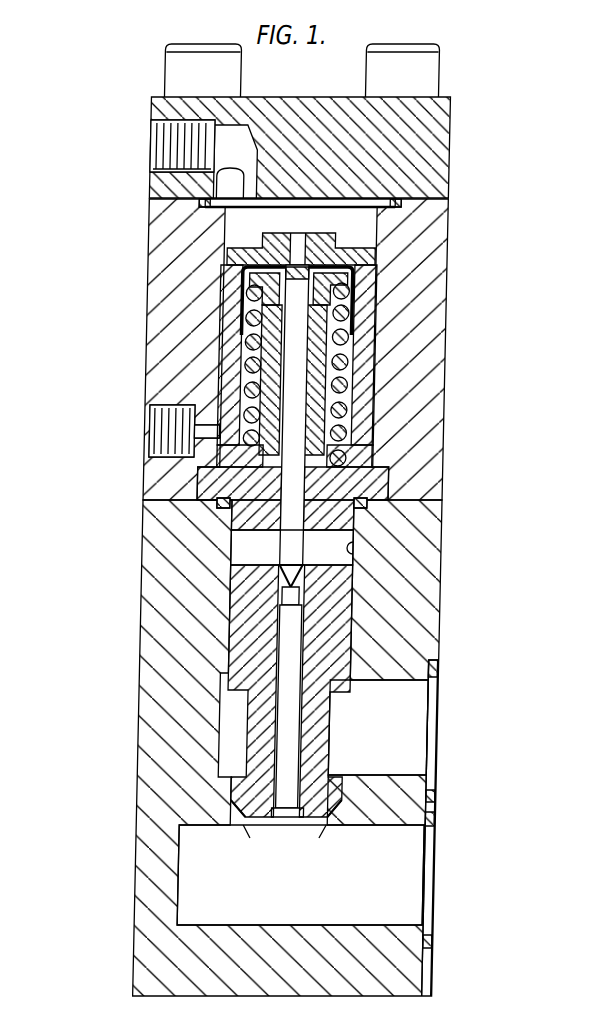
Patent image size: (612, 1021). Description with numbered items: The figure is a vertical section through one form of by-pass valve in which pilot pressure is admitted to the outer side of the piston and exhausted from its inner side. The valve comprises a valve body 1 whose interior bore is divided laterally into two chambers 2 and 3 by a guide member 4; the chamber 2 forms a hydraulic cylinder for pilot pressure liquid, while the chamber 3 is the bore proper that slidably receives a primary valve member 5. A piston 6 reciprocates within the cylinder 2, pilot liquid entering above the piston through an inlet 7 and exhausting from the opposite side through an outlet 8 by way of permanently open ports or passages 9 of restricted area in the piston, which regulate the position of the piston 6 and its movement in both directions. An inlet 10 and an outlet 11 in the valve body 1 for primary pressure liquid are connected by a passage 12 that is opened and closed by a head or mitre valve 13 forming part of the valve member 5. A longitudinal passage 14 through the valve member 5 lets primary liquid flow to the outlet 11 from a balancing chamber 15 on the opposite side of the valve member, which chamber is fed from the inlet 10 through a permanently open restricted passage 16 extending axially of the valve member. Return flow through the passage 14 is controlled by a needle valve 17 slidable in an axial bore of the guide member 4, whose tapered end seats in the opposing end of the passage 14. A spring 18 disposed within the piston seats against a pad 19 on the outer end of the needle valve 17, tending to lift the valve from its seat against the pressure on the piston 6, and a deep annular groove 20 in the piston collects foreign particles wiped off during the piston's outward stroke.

The valve body 1 is at (142, 676).
The chamber (hydraulic cylinder) 2 is at (363, 229).
The chamber (bore proper) 3 is at (351, 548).
The guide member 4 is at (380, 488).
The primary valve member 5 is at (347, 602).
The piston 6 is at (365, 337).
The inlet 7 is at (158, 143).
The outlet 8 is at (169, 436).
The ports or passages of restricted area 9 is at (235, 280).
The inlet 10 is at (415, 732).
The outlet 11 is at (408, 900).
The passage 12 is at (332, 833).
The head or mitre valve 13 is at (246, 788).
The longitudinal passage 14 is at (298, 658).
The balancing chamber or space 15 is at (251, 548).
The passage of restricted area 16 is at (242, 605).
The needle valve 17 is at (301, 545).
The spring 18 is at (369, 452).
The pad 19 is at (366, 294).
The deep annular groove 20 is at (236, 300).